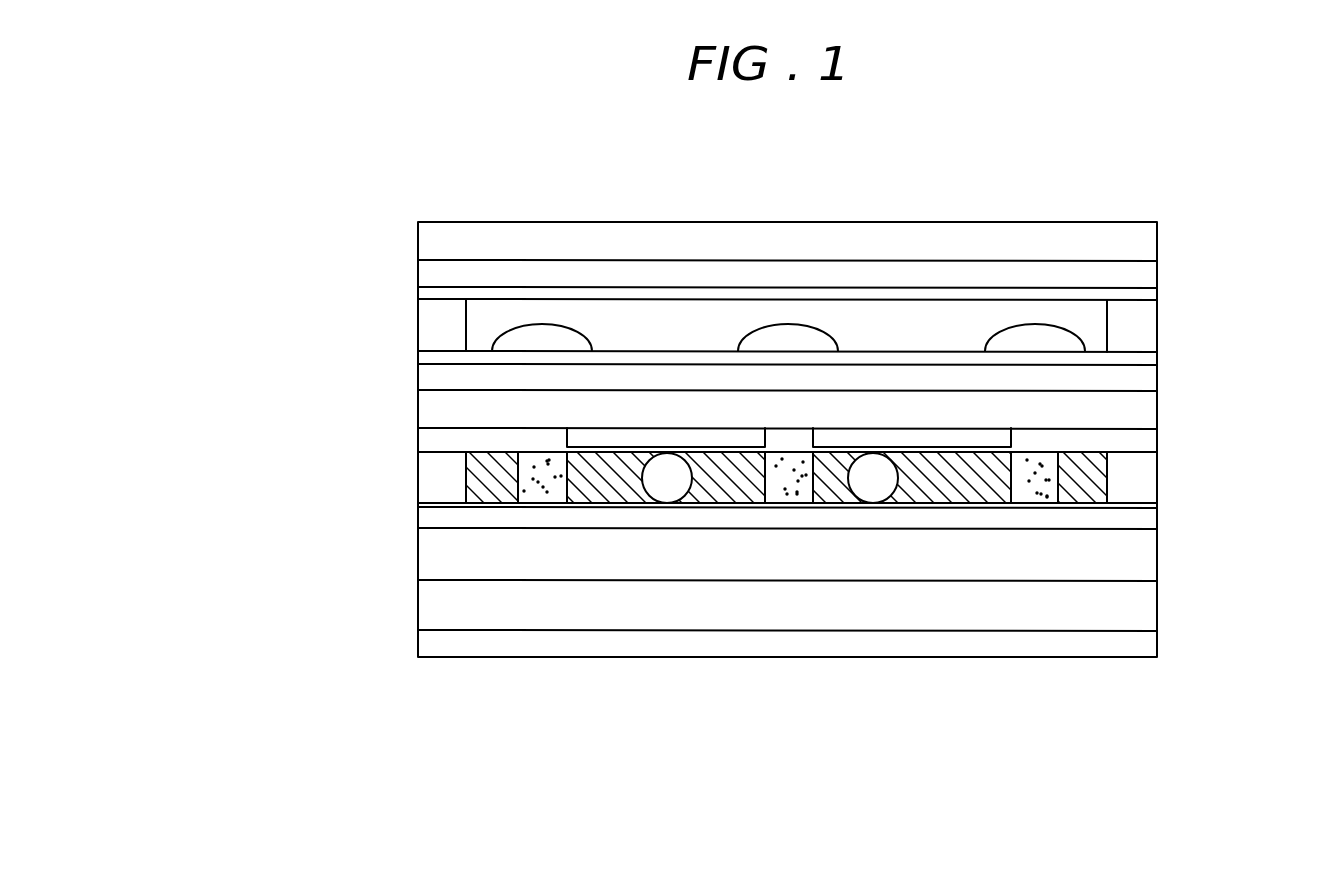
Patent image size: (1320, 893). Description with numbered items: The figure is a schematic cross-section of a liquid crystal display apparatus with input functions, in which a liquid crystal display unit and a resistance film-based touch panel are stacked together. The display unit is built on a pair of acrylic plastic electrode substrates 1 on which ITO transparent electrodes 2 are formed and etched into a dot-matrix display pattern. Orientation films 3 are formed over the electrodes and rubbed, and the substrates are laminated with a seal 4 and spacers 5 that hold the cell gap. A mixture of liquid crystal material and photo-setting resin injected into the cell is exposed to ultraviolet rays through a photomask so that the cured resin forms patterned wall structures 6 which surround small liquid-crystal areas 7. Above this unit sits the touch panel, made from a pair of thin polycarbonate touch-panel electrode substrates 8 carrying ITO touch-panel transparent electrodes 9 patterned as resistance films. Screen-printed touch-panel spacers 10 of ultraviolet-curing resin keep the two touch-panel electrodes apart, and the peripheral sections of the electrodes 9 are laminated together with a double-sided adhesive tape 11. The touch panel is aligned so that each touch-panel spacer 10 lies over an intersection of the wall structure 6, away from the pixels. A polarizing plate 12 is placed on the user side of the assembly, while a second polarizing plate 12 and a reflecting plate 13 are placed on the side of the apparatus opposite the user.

The electrode substrate 1 is at (1130, 418).
The transparent electrode 2 is at (993, 441).
The orientation film 3 is at (437, 437).
The seal 4 is at (438, 482).
The spacer 5 is at (667, 488).
The wall structure 6 is at (792, 492).
The small liquid-crystal area 7 is at (975, 485).
The touch-panel electrode substrate 8 is at (438, 270).
The touch-panel transparent electrode 9 is at (1137, 296).
The touch-panel spacer 10 is at (790, 340).
The double-sided adhesive tape 11 is at (438, 328).
The polarizing plate 12 is at (1133, 252).
The reflecting plate 13 is at (1137, 647).